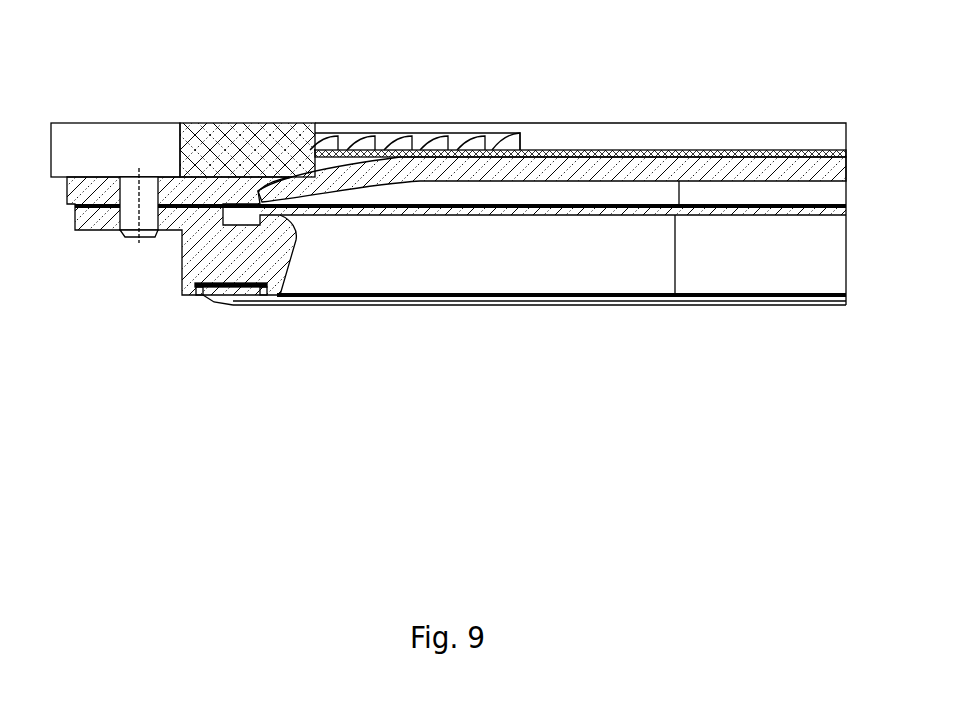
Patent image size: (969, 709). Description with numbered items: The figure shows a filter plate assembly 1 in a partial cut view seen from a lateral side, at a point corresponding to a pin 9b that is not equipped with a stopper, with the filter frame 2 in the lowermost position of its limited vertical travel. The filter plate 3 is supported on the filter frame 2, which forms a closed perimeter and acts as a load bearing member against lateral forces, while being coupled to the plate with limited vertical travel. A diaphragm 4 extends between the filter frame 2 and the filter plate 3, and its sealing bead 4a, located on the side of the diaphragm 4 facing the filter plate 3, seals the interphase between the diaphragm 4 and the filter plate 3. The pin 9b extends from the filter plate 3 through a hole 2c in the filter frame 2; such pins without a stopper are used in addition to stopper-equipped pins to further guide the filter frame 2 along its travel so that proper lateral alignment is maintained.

The filter plate assembly 1 is at (502, 425).
The filter frame 2 is at (295, 262).
The hole 2c is at (108, 230).
The filter plate 3 is at (618, 165).
The diaphragm 4 is at (563, 217).
The sealing bead 4a is at (256, 194).
The pin 9b is at (142, 238).